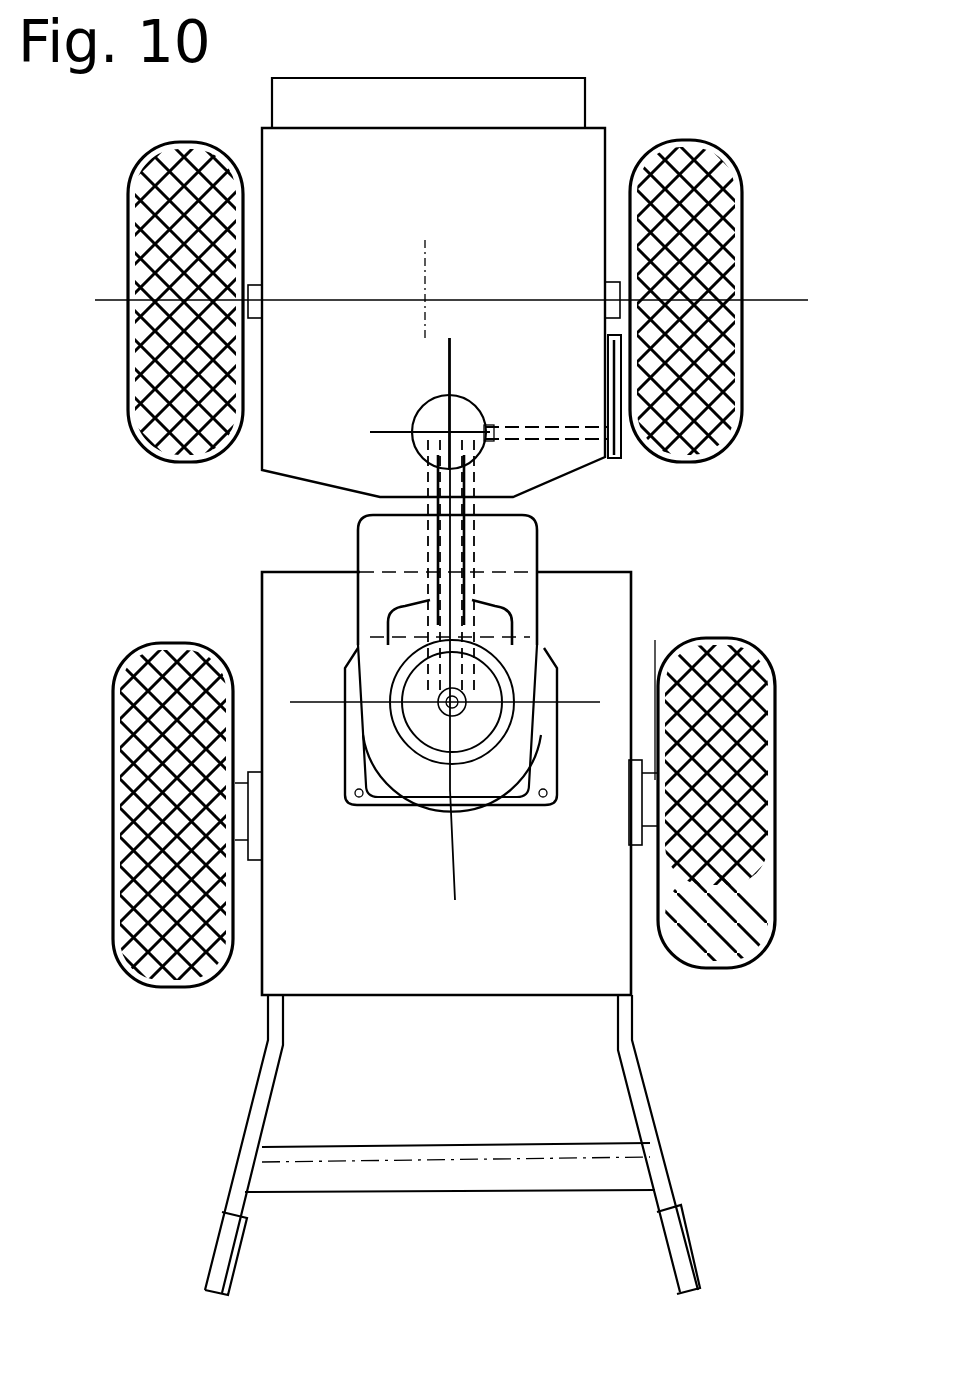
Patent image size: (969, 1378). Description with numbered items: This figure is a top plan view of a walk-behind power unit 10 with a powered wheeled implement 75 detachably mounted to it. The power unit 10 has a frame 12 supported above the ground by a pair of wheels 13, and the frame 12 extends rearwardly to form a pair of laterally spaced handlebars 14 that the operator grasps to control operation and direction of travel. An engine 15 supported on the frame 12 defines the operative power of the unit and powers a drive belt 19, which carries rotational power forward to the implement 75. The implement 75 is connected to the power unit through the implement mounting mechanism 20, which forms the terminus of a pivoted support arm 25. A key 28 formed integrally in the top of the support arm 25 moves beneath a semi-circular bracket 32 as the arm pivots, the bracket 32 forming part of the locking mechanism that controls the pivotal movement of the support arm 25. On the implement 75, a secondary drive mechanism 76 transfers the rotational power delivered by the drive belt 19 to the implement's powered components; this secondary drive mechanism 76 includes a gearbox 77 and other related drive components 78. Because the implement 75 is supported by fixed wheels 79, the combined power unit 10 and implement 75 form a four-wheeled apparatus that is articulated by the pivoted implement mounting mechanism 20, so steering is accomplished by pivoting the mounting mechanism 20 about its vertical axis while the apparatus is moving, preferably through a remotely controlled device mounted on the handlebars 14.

The walk-behind power unit 10 is at (242, 1020).
The frame 12 is at (636, 1002).
The wheels 13 is at (675, 640).
The handlebars 14 is at (270, 1105).
The engine 15 is at (456, 772).
The drive belt 19 is at (425, 497).
The implement mounting mechanism 20 is at (522, 560).
The support arm 25 is at (433, 565).
The key 28 is at (435, 593).
The semi-circular bracket 32 is at (512, 625).
The powered wheeled implement 75 is at (608, 127).
The secondary drive mechanism 76 is at (488, 377).
The gearbox 77 is at (428, 400).
The drive components 78 is at (627, 455).
The fixed wheels 79 is at (140, 157).